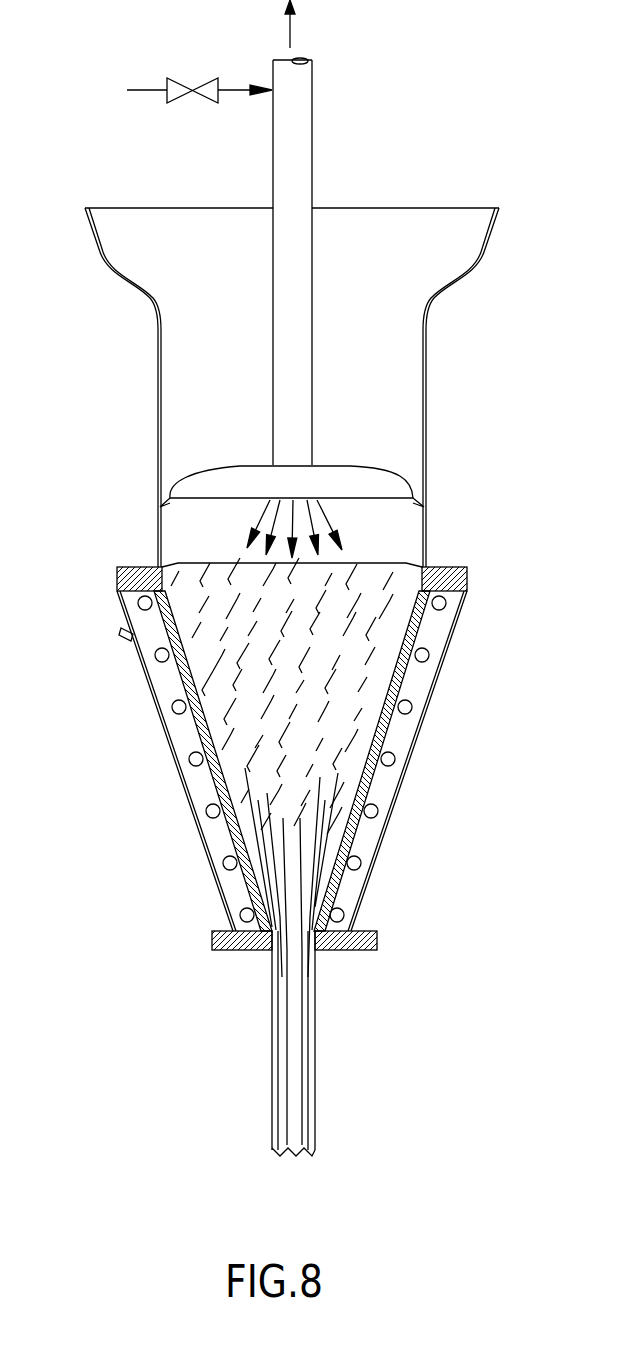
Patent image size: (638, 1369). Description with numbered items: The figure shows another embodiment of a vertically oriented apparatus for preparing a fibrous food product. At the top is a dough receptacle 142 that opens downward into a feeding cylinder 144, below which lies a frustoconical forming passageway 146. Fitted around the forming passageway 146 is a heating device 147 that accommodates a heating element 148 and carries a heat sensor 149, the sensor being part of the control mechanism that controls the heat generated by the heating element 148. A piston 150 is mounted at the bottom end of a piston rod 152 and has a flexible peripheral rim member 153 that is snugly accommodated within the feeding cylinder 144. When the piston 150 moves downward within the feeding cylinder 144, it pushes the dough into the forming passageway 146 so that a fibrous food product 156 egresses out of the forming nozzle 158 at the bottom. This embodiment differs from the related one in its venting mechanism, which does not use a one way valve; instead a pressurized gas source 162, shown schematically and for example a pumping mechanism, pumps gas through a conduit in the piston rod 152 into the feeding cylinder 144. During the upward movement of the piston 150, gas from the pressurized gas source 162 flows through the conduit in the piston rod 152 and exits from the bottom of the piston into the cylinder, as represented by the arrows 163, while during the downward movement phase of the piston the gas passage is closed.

The dough receptacle 142 is at (93, 237).
The feeding cylinder 144 is at (157, 390).
The frustoconical forming passageway 146 is at (392, 622).
The heating device 147 is at (443, 675).
The heating element 148 is at (396, 757).
The heat sensor 149 is at (126, 643).
The piston 150 is at (195, 483).
The piston rod 152 is at (296, 152).
The flexible peripheral rim member 153 is at (165, 507).
The fibrous food product 156 is at (315, 1058).
The forming nozzle 158 is at (289, 934).
The pressurized gas source 162 is at (192, 88).
The gas flow arrows 163 is at (250, 538).